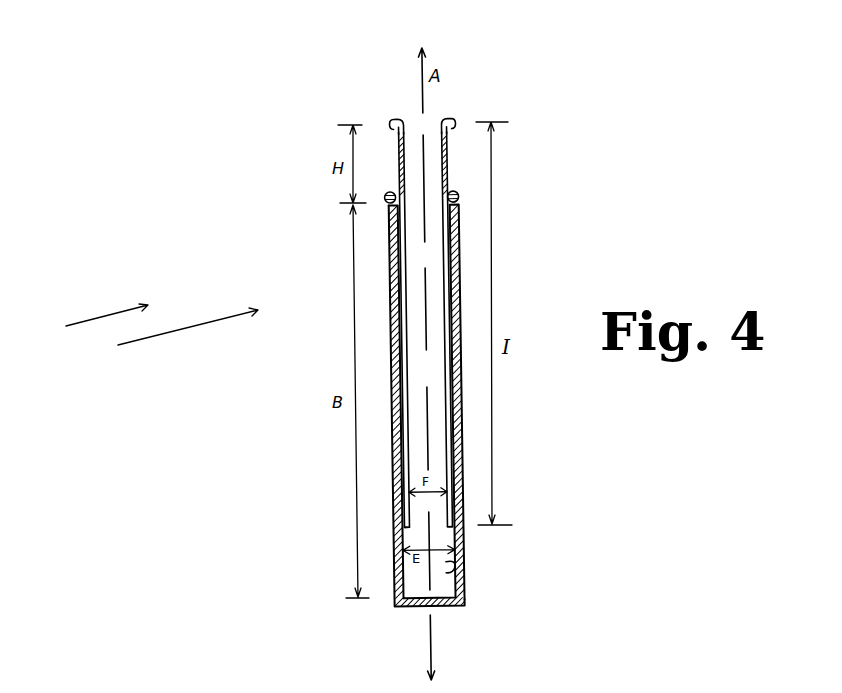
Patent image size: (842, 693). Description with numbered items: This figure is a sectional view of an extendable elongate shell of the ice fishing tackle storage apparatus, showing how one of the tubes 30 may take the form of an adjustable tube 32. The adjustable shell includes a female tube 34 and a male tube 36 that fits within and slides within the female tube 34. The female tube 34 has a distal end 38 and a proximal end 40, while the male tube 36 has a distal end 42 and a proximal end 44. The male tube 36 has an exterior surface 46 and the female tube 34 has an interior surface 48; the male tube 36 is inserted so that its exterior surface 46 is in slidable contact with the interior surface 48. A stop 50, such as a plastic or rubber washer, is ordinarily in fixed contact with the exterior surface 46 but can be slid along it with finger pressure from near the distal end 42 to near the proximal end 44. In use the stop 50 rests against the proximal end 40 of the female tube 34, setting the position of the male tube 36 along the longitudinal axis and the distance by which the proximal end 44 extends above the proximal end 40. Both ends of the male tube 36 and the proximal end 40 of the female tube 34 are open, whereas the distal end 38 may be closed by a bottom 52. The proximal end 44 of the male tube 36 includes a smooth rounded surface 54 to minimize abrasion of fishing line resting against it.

The tube 30 is at (88, 325).
The adjustable tube 32 is at (169, 333).
The female tube 34 is at (472, 220).
The male tube 36 is at (456, 128).
The distal end 38 is at (395, 596).
The proximal end 40 is at (385, 214).
The distal end 42 is at (442, 522).
The proximal end 44 is at (453, 108).
The exterior surface 46 is at (392, 147).
The interior surface 48 is at (455, 566).
The stop 50 is at (391, 180).
The bottom 52 is at (456, 615).
The rounded surface 54 is at (390, 102).